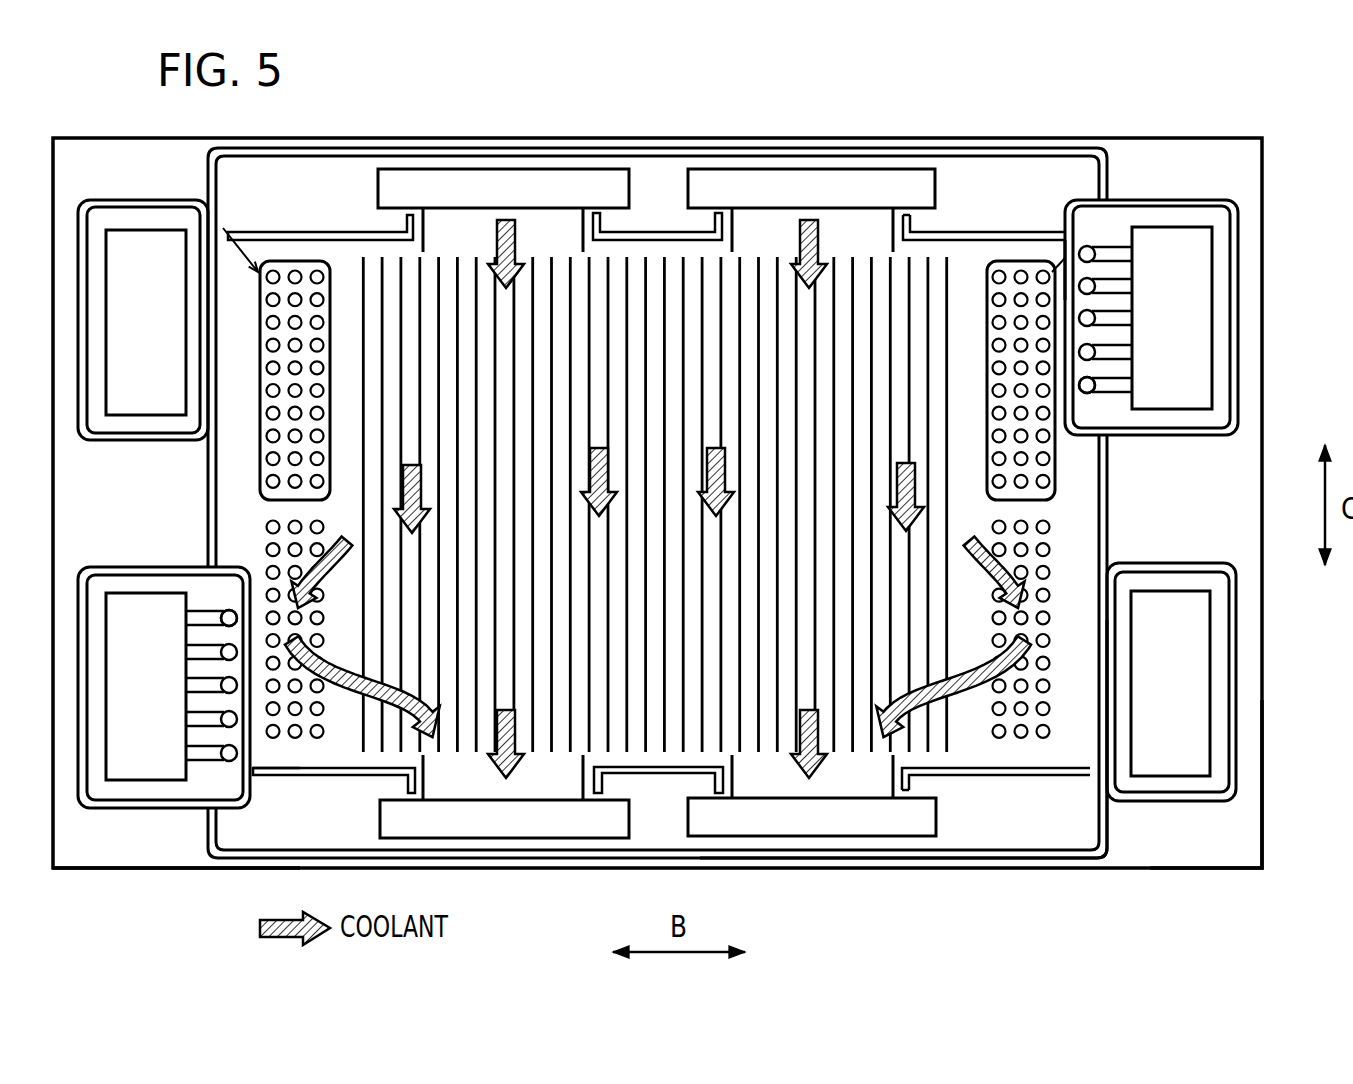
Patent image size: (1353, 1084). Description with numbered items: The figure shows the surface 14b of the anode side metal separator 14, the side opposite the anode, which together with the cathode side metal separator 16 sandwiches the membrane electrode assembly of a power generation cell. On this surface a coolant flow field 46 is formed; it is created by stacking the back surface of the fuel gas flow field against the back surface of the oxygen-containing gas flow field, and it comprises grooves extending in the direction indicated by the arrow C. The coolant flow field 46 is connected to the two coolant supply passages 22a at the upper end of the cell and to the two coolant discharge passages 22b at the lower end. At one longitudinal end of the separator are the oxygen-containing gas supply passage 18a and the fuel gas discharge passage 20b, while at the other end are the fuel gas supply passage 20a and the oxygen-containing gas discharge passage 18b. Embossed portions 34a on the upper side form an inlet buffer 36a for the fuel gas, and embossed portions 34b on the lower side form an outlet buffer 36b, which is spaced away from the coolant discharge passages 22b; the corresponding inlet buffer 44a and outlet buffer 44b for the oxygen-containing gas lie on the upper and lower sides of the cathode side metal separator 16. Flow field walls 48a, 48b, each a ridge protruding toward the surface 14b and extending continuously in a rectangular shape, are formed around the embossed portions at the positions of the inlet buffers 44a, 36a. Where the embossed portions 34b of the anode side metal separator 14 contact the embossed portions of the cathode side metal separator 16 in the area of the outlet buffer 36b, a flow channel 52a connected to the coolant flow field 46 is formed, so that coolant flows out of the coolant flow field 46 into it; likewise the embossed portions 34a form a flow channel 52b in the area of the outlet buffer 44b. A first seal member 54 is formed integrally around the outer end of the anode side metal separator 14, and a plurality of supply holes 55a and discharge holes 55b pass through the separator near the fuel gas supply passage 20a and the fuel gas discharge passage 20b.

The anode side metal separator 14 is at (657, 468).
The cathode side metal separator 16 is at (620, 101).
The surface 14b is at (1226, 832).
The oxygen-containing gas supply passage 18a is at (143, 320).
The oxygen-containing gas discharge passage 18b is at (1171, 682).
The fuel gas supply passage 20a is at (1151, 317).
The fuel gas discharge passage 20b is at (164, 687).
The coolant supply passages 22a is at (646, 210).
The coolant discharge passages 22b is at (671, 797).
The embossed portions 34a is at (1045, 523).
The embossed portions 34b is at (272, 548).
The inlet buffer 36a is at (1073, 248).
The outlet buffer 36b is at (293, 757).
The inlet buffer 44a is at (197, 206).
The outlet buffer 44b is at (1021, 752).
The coolant flow field 46 is at (640, 298).
The flow field wall 48a is at (297, 262).
The flow field wall 48b is at (1015, 260).
The flow channel 52a is at (343, 698).
The flow channel 52b is at (975, 690).
The first seal member 54 is at (142, 868).
The supply holes 55a is at (1093, 392).
The discharge holes 55b is at (227, 612).